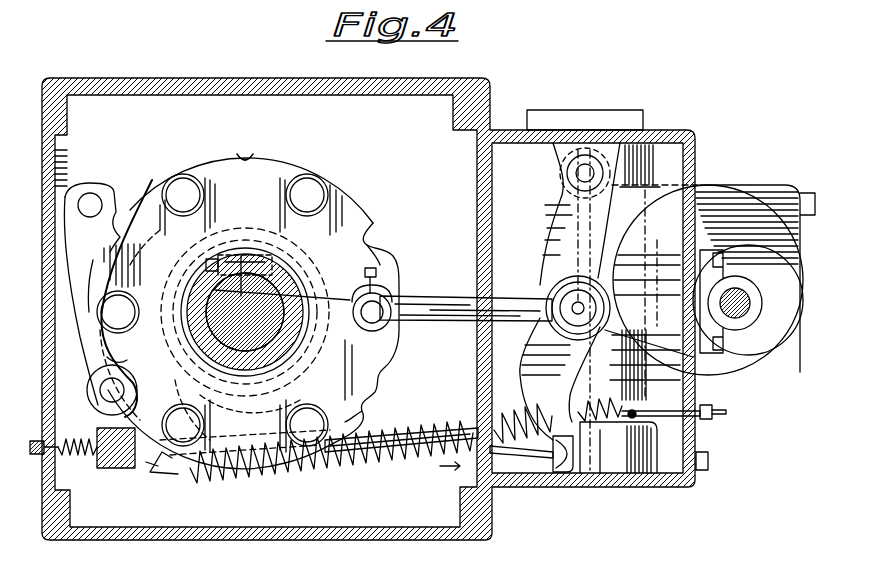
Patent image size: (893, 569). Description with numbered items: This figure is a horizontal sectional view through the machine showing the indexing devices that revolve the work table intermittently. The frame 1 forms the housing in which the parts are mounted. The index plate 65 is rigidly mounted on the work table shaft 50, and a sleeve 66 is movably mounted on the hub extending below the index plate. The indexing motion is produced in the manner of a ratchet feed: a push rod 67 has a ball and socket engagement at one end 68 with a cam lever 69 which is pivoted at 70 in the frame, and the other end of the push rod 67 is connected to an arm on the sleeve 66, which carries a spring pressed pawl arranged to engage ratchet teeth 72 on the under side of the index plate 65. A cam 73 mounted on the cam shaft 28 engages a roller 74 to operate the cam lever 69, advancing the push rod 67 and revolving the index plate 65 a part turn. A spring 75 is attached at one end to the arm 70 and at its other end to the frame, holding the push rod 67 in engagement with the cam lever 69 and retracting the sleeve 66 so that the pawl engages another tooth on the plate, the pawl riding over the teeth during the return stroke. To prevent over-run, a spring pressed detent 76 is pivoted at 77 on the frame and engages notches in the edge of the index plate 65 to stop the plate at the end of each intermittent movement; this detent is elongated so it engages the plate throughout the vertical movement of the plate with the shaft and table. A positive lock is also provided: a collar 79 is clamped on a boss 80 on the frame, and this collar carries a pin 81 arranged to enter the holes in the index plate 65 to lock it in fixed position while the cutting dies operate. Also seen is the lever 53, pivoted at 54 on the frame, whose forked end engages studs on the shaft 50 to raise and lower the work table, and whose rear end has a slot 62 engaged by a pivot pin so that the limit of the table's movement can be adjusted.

The frame 1 is at (490, 516).
The cam shaft 28 is at (745, 310).
The work table shaft 50 is at (350, 300).
The lever 53 is at (450, 320).
The pivot 54 is at (650, 472).
The slot 62 is at (180, 192).
The index plate 65 is at (285, 172).
The sleeve 66 is at (155, 476).
The push rod 67 is at (416, 432).
The ball and socket engagement 68 is at (556, 472).
The cam lever 69 is at (560, 232).
The pivot 70 is at (568, 175).
The ratchet teeth 72 is at (393, 212).
The cam 73 is at (738, 187).
The roller 74 is at (556, 296).
The spring 75 is at (298, 478).
The spring pressed detent 76 is at (241, 152).
The pivot 77 is at (94, 198).
The collar 79 is at (290, 243).
The boss 80 is at (203, 285).
The pin 81 is at (378, 312).